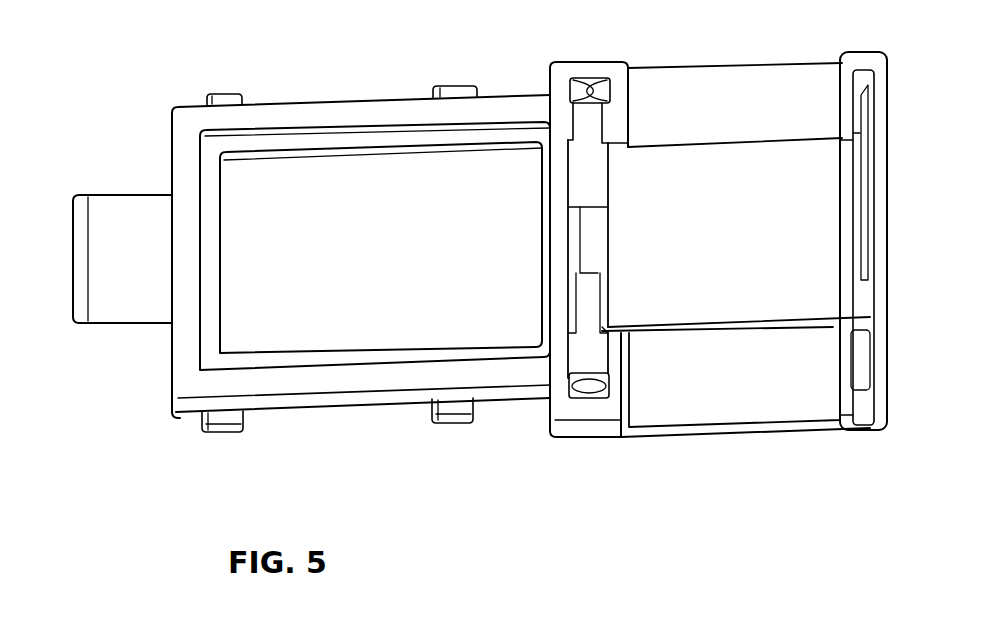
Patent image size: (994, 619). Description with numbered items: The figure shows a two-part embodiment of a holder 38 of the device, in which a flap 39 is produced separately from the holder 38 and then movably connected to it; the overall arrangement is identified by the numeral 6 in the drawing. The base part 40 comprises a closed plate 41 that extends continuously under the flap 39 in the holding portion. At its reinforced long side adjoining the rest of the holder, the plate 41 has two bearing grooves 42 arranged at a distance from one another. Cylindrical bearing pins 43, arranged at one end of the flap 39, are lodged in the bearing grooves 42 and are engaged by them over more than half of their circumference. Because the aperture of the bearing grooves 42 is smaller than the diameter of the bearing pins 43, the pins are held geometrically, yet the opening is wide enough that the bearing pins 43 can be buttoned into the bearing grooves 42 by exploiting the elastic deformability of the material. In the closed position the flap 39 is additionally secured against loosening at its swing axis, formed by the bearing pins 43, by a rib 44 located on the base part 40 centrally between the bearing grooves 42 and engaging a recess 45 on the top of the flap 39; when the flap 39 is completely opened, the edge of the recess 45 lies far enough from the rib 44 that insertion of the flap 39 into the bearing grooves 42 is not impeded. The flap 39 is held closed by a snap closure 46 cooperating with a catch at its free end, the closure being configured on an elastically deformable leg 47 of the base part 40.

The housing 6 is at (366, 103).
The holder 38 is at (378, 405).
The flap 39 is at (693, 193).
The base part 40 is at (549, 94).
The closed plate 41 is at (765, 83).
The bearing grooves 42 is at (580, 84).
The bearing pins 43 is at (592, 110).
The rib 44 is at (566, 229).
The recess 45 is at (592, 245).
The snap closure 46 is at (866, 262).
The elastically deformable leg 47 is at (876, 305).